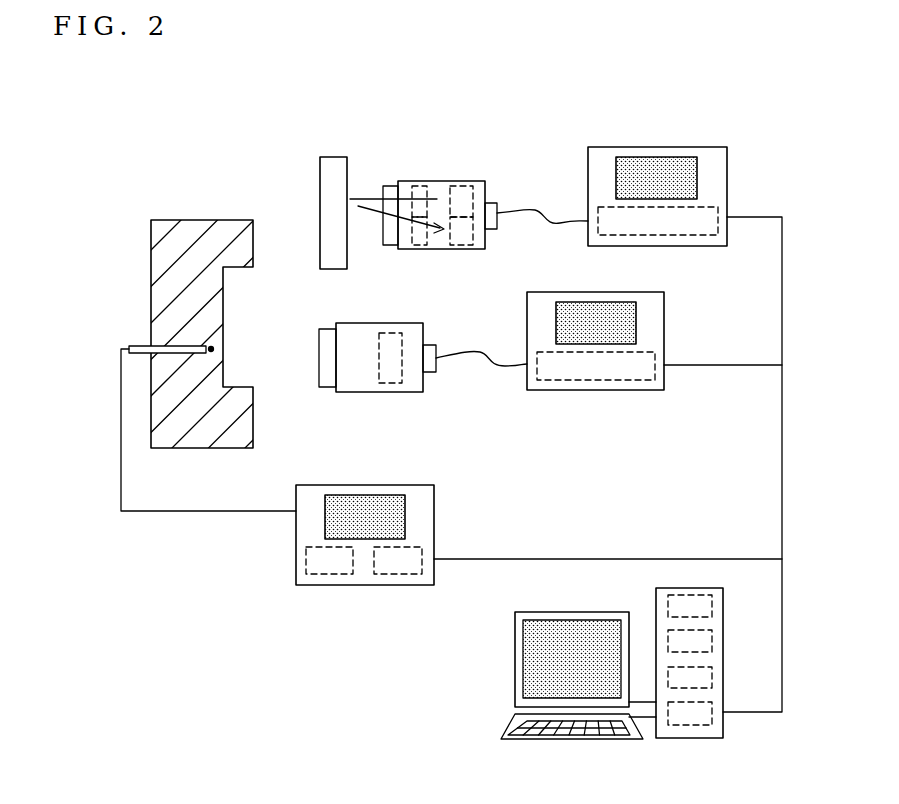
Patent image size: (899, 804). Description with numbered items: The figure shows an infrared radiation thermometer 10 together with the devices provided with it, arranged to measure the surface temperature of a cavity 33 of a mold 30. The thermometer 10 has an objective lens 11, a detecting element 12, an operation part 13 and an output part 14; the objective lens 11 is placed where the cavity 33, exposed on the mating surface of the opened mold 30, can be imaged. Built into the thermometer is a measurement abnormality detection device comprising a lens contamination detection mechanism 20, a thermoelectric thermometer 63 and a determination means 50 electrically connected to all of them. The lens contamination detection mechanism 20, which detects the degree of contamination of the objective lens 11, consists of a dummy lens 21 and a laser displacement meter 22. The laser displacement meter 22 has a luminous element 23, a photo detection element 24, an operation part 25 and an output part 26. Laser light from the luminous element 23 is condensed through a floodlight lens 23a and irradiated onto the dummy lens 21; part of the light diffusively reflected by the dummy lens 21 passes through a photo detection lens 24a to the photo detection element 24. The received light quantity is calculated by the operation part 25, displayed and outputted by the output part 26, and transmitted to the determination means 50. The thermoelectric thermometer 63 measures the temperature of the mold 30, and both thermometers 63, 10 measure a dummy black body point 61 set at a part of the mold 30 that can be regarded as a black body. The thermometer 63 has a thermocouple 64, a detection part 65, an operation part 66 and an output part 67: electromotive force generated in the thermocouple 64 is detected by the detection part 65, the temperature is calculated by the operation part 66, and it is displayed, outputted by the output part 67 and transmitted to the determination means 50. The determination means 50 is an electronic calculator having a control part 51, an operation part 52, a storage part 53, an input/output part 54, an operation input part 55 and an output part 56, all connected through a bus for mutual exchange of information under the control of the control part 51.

The infrared radiation thermometer 10 is at (502, 390).
The objective lens 11 is at (322, 388).
The detecting element 12 is at (392, 384).
The operation part 13 is at (575, 381).
The output part 14 is at (622, 305).
The lens contamination detection mechanism 20 is at (509, 100).
The dummy lens 21 is at (331, 157).
The laser displacement meter 22 is at (535, 168).
The luminous element 23 is at (458, 186).
The floodlight lens 23a is at (415, 186).
The photo detection element 24 is at (470, 249).
The photo detection lens 24a is at (420, 249).
The operation part 25 is at (615, 236).
The output part 26 is at (692, 165).
The mold 30 is at (188, 220).
The cavity 33 is at (237, 268).
The determination means 50 is at (485, 673).
The control part 51 is at (668, 600).
The operation part 52 is at (712, 632).
The storage part 53 is at (712, 668).
The input/output part 54 is at (723, 726).
The operation input part 55 is at (501, 730).
The output part 56 is at (515, 643).
The dummy black body point 61 is at (222, 349).
The thermoelectric thermometer 63 is at (280, 531).
The thermocouple 64 is at (143, 345).
The detection part 65 is at (332, 575).
The operation part 66 is at (397, 575).
The output part 67 is at (392, 500).